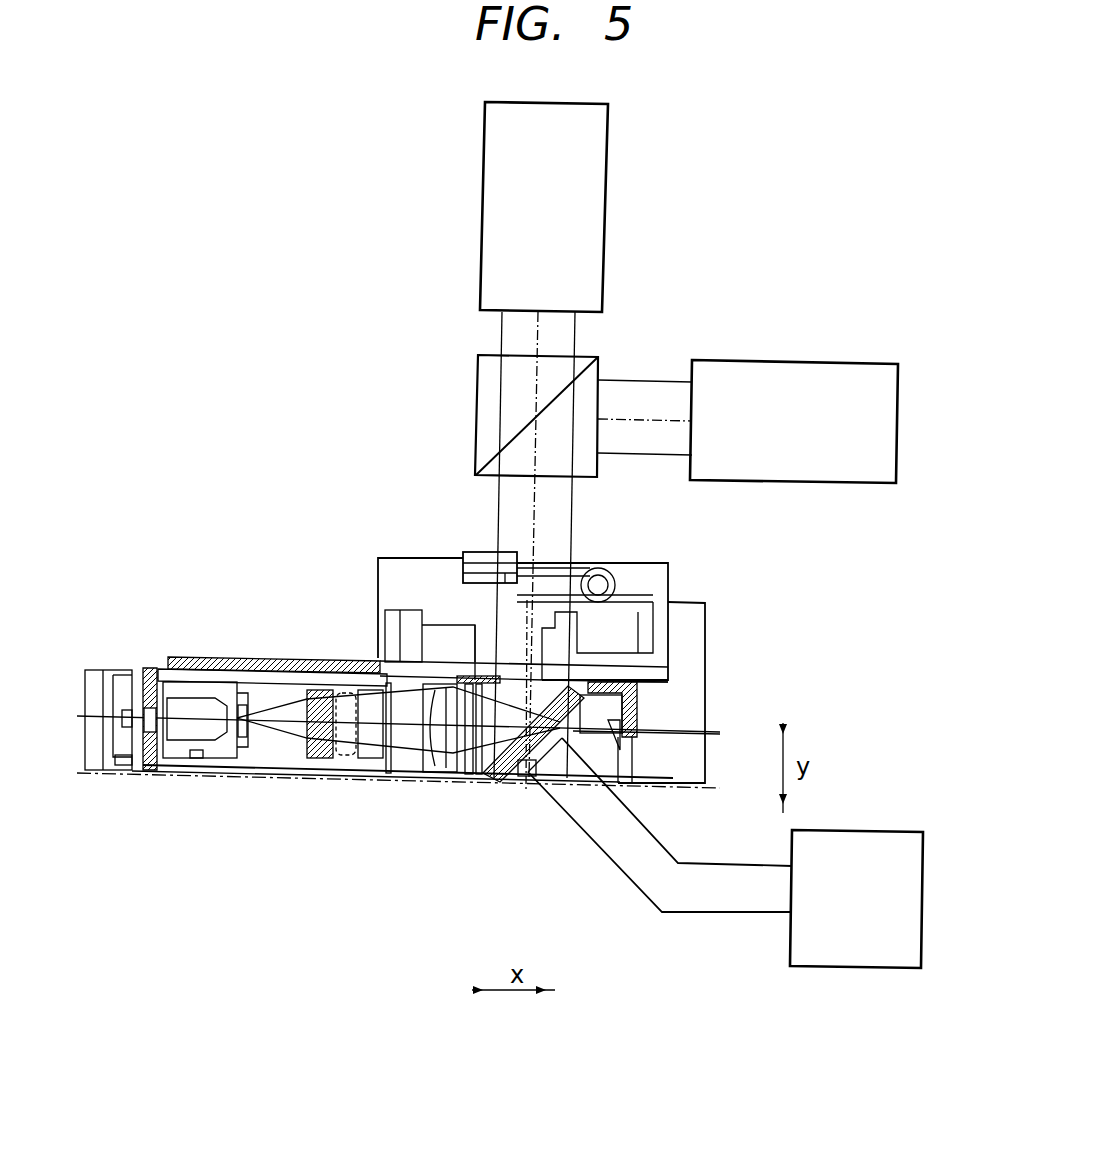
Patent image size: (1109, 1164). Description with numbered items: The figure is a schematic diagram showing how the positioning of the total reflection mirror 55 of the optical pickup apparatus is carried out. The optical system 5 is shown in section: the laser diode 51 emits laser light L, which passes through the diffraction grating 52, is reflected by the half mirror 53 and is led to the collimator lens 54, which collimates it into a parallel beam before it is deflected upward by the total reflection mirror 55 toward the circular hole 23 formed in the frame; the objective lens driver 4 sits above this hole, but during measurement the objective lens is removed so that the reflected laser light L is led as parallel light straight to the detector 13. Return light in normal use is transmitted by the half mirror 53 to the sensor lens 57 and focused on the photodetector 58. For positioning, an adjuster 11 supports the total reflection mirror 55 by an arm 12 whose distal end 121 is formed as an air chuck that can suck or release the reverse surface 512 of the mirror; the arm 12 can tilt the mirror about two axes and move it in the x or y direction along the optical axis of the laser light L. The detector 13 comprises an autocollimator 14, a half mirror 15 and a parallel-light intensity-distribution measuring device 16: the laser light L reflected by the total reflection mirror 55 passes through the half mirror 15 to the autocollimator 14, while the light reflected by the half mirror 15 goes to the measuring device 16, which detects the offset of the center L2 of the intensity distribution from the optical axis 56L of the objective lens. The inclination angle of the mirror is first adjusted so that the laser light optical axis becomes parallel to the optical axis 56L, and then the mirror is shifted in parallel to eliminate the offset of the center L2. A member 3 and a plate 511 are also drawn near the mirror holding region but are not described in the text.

The holding member 3 is at (597, 708).
The objective lens driver 4 is at (540, 663).
The optical system 5 is at (398, 770).
The adjuster 11 is at (807, 930).
The arm 12 is at (660, 845).
The distal end 121 is at (570, 793).
The detector 13 is at (708, 292).
The autocollimator 14 is at (598, 197).
The half mirror 15 is at (598, 357).
The parallel-light intensity-distribution measuring device 16 is at (748, 371).
The circular hole 23 is at (593, 672).
The laser diode 51 is at (372, 777).
The diffraction grating 52 is at (337, 773).
The half mirror 53 is at (348, 772).
The collimator lens 54 is at (428, 773).
The total reflection mirror 55 is at (515, 787).
The holder plate 511 is at (475, 780).
The reverse surface 512 is at (530, 787).
The sensor lens 57 is at (213, 756).
The photodetector 58 is at (120, 770).
The optical axis 56L is at (533, 516).
The laser light L is at (560, 527).
The center L2 is at (537, 493).